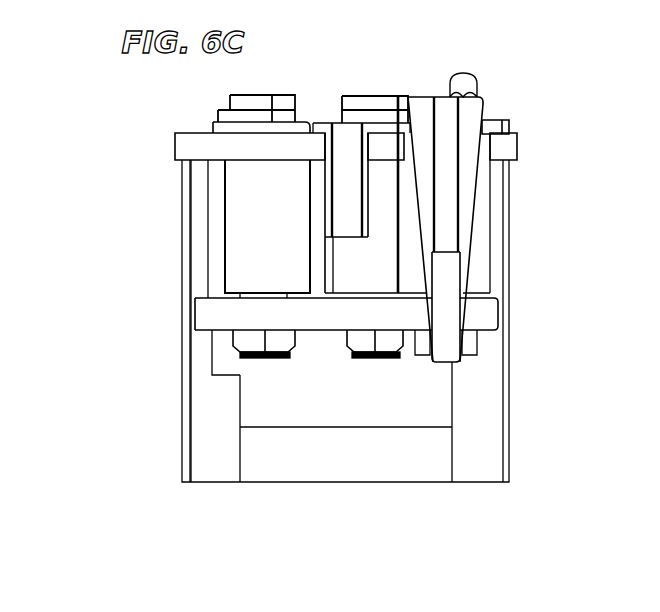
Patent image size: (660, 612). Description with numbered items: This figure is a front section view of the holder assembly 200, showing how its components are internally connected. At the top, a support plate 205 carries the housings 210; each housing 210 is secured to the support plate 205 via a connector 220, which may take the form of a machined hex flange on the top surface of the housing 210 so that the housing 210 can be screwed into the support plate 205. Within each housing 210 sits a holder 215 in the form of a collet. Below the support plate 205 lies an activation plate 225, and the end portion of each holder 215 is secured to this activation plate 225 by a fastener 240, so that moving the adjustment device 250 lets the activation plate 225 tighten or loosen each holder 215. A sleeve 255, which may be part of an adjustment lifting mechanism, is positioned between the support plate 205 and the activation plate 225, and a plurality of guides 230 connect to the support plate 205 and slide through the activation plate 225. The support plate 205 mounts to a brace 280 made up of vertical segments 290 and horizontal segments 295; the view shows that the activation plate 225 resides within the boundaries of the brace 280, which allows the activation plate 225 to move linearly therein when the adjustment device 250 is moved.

The holder assembly 200 is at (527, 222).
The support plate 205 is at (175, 150).
The housing 210 is at (225, 255).
The holder 215 is at (232, 99).
The connector 220 is at (212, 126).
The activation plate 225 is at (195, 318).
The guides 230 is at (207, 281).
The fastener 240 is at (350, 353).
The adjustment device 250 is at (468, 82).
The sleeve 255 is at (315, 122).
The brace 280 is at (160, 472).
The vertical segments 290 is at (207, 438).
The horizontal segments 295 is at (327, 472).